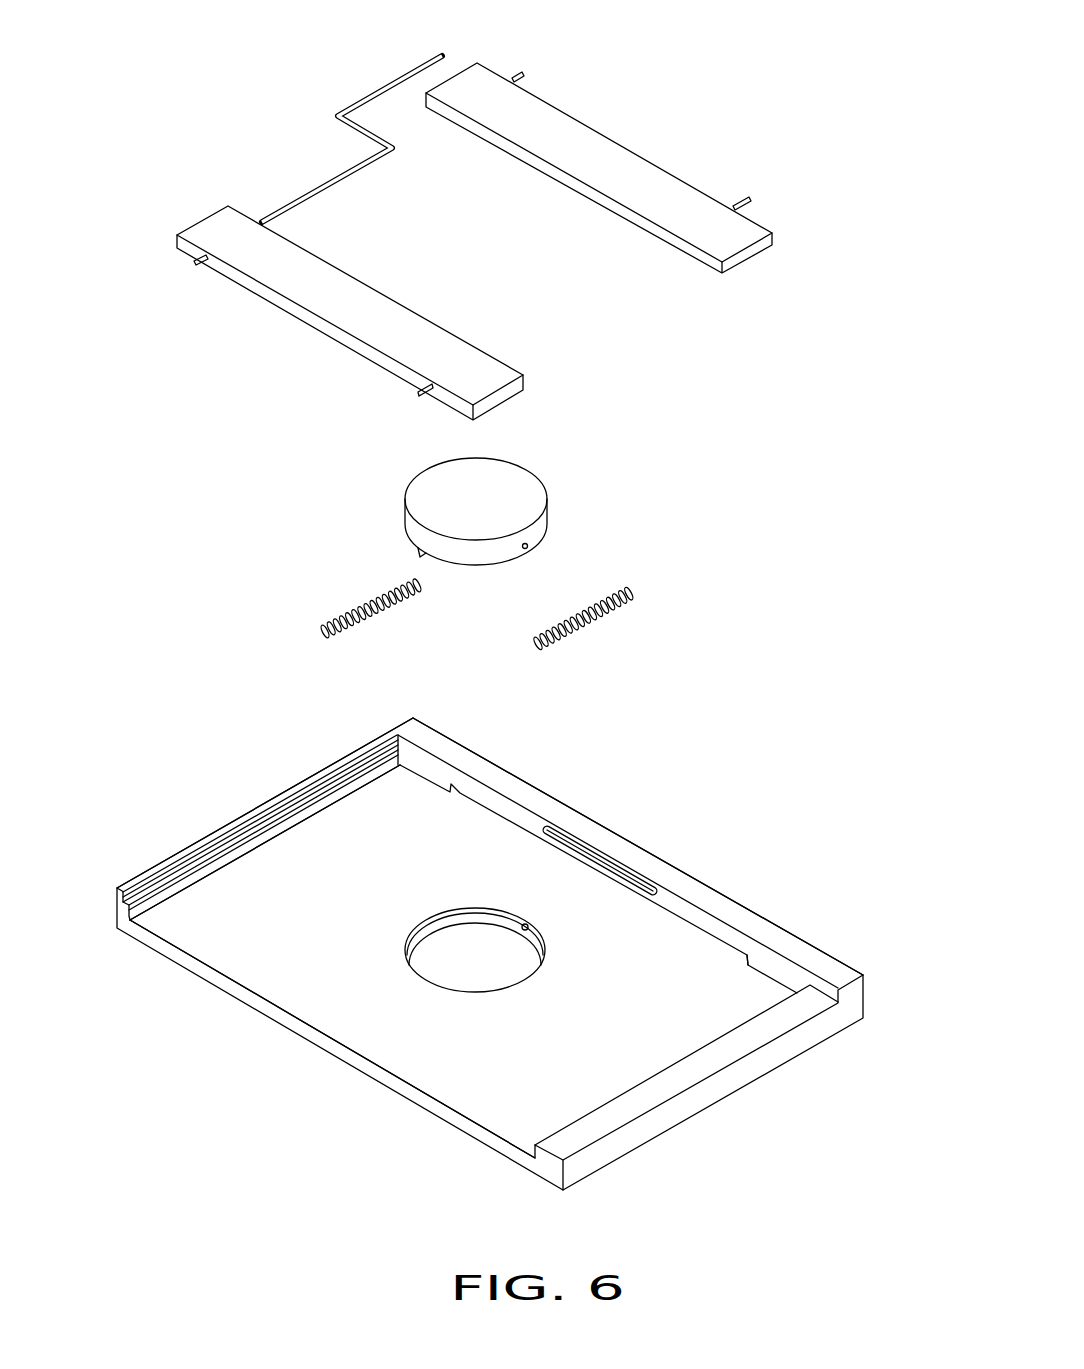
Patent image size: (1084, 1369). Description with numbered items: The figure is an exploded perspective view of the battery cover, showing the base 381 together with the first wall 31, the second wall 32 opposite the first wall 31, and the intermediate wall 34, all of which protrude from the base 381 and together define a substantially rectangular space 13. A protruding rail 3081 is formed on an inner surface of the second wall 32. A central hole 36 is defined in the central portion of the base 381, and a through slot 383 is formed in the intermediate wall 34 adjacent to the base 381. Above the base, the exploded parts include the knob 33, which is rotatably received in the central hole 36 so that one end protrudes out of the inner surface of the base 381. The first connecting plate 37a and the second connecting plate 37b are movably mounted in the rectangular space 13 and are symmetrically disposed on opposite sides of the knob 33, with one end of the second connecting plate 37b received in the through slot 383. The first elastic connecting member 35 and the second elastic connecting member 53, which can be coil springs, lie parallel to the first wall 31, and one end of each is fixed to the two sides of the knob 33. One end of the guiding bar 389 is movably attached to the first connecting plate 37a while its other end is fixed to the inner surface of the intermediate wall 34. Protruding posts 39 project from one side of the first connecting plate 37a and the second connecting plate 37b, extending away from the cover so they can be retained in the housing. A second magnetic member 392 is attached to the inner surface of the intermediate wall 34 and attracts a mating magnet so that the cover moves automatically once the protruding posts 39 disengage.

The guiding bar 389 is at (426, 55).
The protruding posts 39 is at (524, 74).
The second connecting plate 37b is at (647, 180).
The first connecting plate 37a is at (357, 303).
The knob 33 is at (392, 506).
The first elastic connecting member 35 is at (373, 603).
The second elastic connecting member 53 is at (617, 587).
The first wall 31 is at (512, 954).
The second wall 32 is at (265, 814).
The protruding rail 3081 is at (307, 771).
The intermediate wall 34 is at (630, 855).
The second magnetic member 392 is at (548, 826).
The through slot 383 is at (713, 948).
The central hole 36 is at (445, 963).
The base 381 is at (350, 1058).
The rectangular space 13 is at (463, 1062).